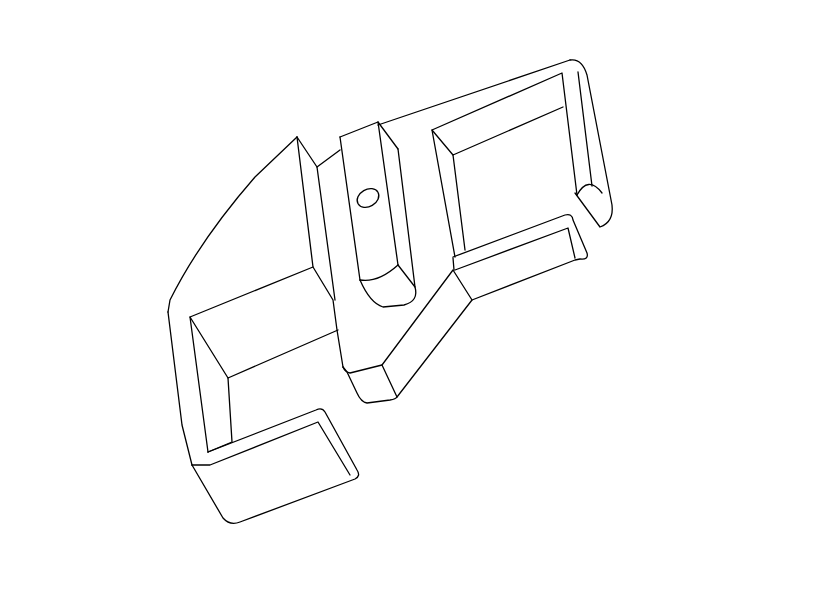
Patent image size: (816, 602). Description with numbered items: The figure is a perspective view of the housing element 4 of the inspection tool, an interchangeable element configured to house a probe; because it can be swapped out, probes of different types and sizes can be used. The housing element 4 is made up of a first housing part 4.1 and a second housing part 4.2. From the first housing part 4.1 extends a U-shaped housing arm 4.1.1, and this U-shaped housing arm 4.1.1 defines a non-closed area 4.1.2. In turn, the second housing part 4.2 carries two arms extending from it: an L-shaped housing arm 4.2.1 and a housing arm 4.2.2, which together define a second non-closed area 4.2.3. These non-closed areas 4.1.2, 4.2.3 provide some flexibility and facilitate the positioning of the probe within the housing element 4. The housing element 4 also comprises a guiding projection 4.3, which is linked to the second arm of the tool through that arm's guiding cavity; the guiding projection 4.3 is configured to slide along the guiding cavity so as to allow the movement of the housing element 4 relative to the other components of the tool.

The housing element 4 is at (128, 121).
The first housing part 4.1 is at (162, 245).
The U-shaped housing arm 4.1.1 is at (200, 415).
The non-closed area 4.1.2 is at (308, 389).
The second housing part 4.2 is at (488, 66).
The L-shaped housing arm 4.2.1 is at (583, 72).
The housing arm 4.2.2 is at (518, 262).
The non-closed area 4.2.3 is at (539, 184).
The guiding projection 4.3 is at (365, 130).